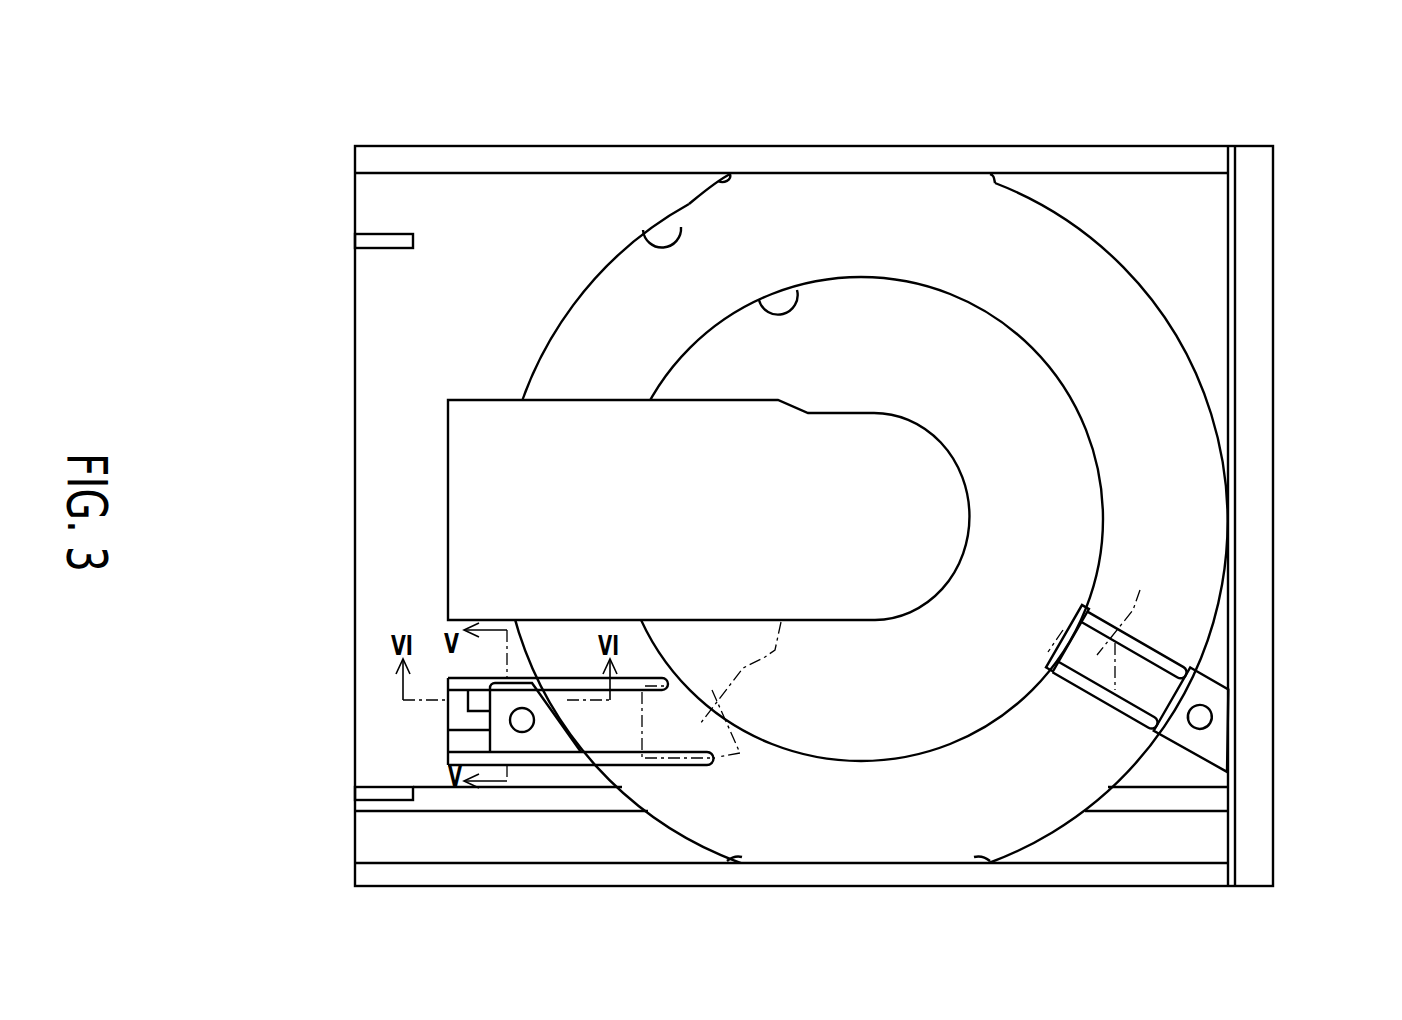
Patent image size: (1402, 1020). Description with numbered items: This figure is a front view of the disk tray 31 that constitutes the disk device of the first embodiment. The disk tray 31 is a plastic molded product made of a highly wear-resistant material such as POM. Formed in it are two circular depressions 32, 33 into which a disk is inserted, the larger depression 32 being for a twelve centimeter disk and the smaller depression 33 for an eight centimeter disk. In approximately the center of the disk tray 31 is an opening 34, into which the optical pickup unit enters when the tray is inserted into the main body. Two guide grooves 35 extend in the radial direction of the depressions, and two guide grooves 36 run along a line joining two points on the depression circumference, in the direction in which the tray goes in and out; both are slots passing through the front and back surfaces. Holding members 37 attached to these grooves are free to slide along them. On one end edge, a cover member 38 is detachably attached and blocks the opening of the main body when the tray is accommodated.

The disk tray 31 is at (468, 220).
The circular depression 32 is at (672, 246).
The circular depression 33 is at (796, 292).
The opening 34 is at (503, 560).
The guide groove 35 is at (1140, 712).
The guide groove 36 is at (628, 760).
The holding member 37 is at (781, 622).
The cover member 38 is at (1264, 262).